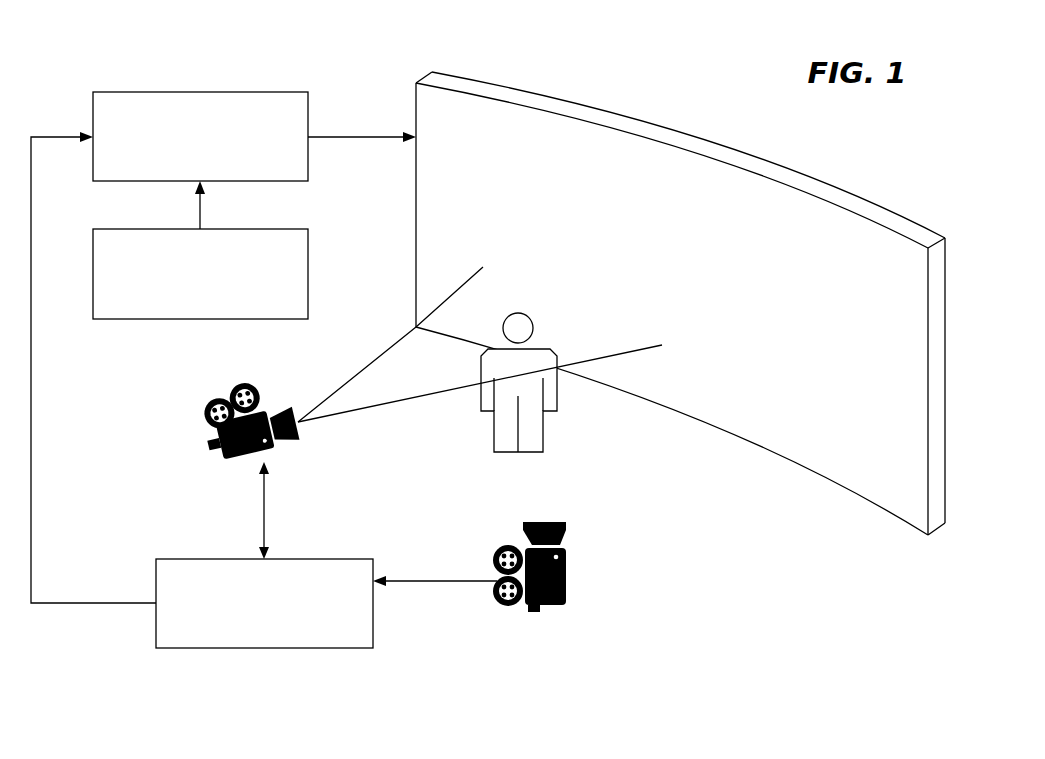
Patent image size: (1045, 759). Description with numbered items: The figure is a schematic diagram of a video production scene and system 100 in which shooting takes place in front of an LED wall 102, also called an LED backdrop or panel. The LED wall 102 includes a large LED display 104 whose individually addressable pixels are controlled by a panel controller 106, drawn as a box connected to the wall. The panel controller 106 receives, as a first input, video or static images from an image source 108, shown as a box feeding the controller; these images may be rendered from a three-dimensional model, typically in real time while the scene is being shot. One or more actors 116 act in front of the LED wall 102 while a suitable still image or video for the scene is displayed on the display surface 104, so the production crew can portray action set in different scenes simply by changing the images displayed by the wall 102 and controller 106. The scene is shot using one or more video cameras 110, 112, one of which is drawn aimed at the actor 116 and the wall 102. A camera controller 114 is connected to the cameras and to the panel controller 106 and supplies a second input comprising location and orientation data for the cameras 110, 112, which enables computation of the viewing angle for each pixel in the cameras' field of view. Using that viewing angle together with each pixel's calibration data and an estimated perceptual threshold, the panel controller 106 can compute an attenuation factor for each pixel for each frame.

The video production scene and system 100 is at (645, 52).
The LED wall 102 is at (785, 165).
The LED display 104 is at (807, 438).
The panel controller 106 is at (201, 91).
The image source 108 is at (200, 320).
The video camera 110 is at (245, 462).
The video camera 112 is at (550, 581).
The camera controller 114 is at (263, 648).
The actor 116 is at (507, 452).